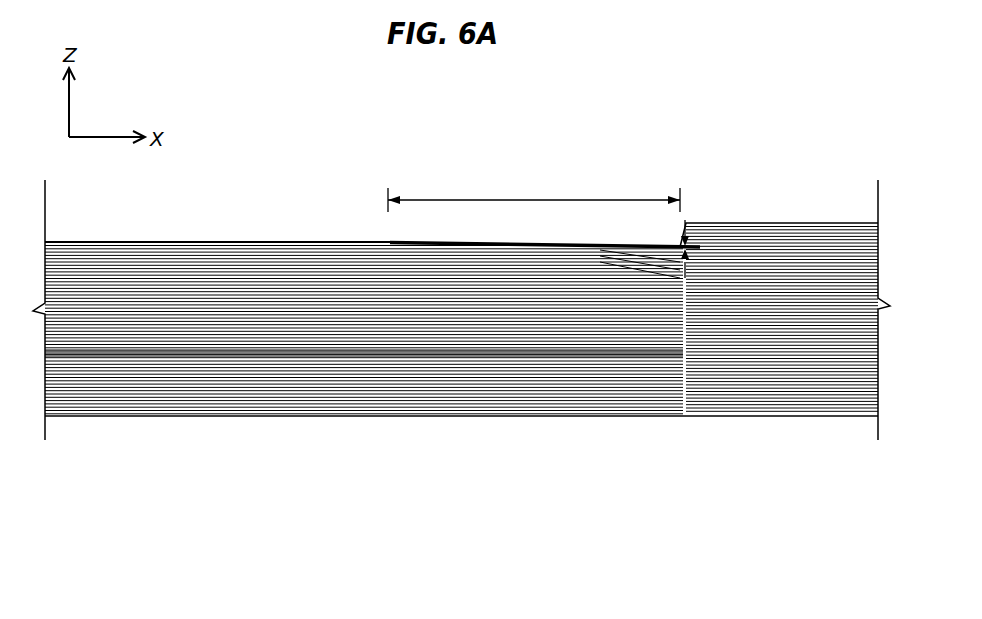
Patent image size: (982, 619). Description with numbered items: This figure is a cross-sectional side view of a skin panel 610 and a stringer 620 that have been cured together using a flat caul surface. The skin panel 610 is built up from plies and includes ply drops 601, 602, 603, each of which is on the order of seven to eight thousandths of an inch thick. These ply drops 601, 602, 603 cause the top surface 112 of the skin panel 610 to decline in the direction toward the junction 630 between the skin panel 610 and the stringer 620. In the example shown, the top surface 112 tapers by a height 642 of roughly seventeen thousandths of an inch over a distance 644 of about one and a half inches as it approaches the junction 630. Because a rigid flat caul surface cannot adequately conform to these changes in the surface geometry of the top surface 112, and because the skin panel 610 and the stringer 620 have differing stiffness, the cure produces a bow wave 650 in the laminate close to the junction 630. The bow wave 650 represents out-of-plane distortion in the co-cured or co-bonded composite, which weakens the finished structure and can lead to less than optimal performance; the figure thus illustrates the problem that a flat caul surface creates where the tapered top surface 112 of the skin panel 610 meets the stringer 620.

The top surface 112 is at (270, 236).
The distance 644 is at (538, 200).
The height 642 is at (688, 246).
The stringer 620 is at (820, 236).
The junction 630 is at (670, 240).
The bow wave 650 is at (668, 268).
The skin panel 610 is at (167, 380).
The ply drop 601 is at (333, 368).
The ply drop 602 is at (432, 368).
The ply drop 603 is at (593, 368).